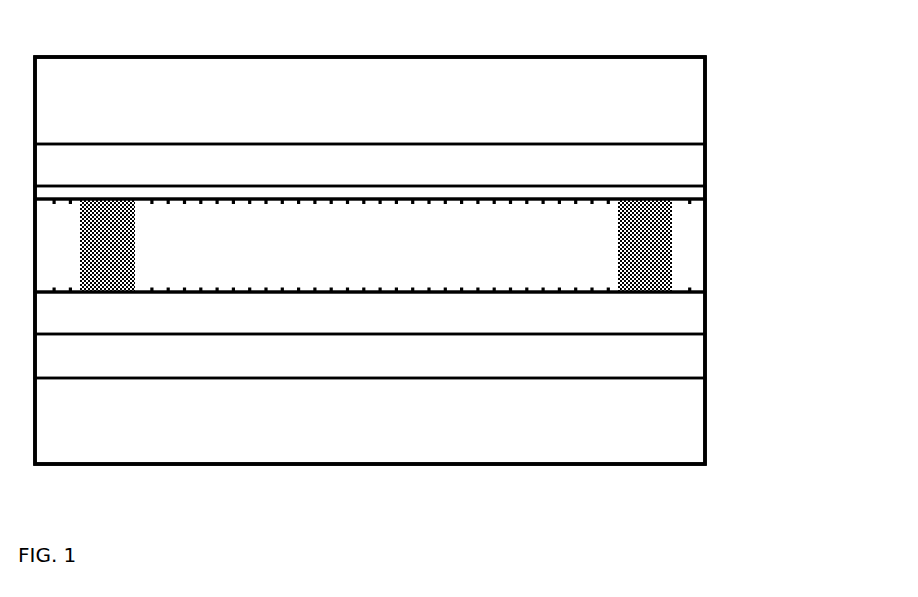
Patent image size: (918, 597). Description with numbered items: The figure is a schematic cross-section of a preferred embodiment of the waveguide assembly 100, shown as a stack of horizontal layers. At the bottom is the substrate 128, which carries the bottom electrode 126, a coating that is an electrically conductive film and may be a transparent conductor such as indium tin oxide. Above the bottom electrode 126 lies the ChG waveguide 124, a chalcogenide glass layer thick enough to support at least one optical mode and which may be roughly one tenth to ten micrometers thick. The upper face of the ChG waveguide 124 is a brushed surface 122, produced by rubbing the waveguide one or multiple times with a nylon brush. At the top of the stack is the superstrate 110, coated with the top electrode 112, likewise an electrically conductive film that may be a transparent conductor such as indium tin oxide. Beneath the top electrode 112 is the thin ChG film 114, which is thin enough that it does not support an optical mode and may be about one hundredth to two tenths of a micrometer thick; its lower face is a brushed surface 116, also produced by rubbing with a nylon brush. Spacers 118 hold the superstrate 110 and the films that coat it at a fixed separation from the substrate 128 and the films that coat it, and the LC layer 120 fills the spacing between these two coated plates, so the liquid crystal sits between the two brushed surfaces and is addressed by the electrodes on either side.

The waveguide assembly 100 is at (522, 44).
The superstrate 110 is at (705, 98).
The top electrode 112 is at (705, 162).
The thin ChG film 114 is at (705, 192).
The brushed surface 116 is at (705, 203).
The spacers 118 is at (127, 249).
The LC layer 120 is at (705, 264).
The brushed surface 122 is at (705, 292).
The ChG waveguide 124 is at (705, 313).
The bottom electrode 126 is at (705, 357).
The substrate 128 is at (705, 416).